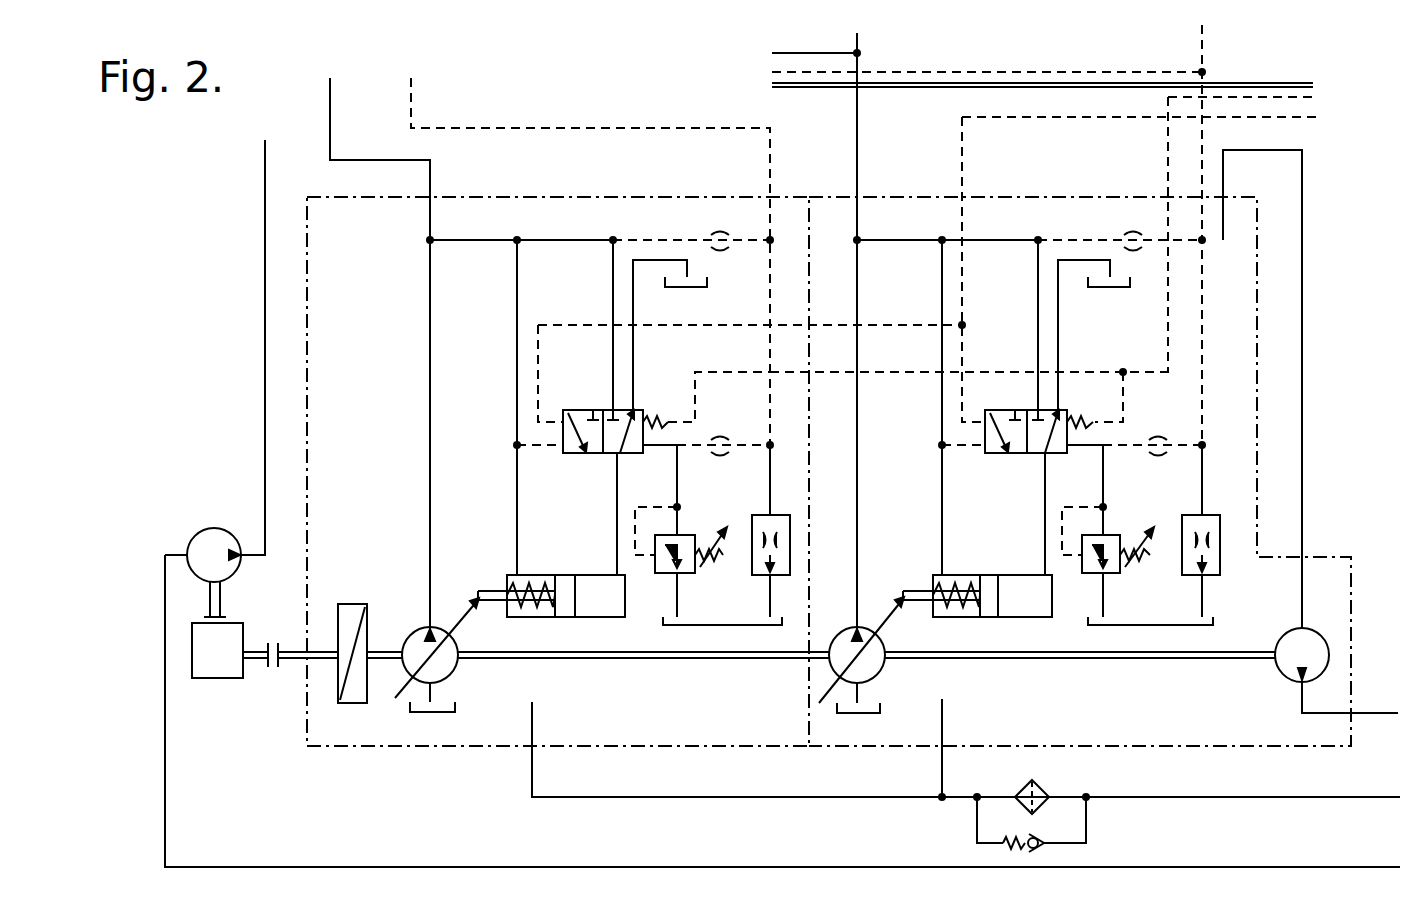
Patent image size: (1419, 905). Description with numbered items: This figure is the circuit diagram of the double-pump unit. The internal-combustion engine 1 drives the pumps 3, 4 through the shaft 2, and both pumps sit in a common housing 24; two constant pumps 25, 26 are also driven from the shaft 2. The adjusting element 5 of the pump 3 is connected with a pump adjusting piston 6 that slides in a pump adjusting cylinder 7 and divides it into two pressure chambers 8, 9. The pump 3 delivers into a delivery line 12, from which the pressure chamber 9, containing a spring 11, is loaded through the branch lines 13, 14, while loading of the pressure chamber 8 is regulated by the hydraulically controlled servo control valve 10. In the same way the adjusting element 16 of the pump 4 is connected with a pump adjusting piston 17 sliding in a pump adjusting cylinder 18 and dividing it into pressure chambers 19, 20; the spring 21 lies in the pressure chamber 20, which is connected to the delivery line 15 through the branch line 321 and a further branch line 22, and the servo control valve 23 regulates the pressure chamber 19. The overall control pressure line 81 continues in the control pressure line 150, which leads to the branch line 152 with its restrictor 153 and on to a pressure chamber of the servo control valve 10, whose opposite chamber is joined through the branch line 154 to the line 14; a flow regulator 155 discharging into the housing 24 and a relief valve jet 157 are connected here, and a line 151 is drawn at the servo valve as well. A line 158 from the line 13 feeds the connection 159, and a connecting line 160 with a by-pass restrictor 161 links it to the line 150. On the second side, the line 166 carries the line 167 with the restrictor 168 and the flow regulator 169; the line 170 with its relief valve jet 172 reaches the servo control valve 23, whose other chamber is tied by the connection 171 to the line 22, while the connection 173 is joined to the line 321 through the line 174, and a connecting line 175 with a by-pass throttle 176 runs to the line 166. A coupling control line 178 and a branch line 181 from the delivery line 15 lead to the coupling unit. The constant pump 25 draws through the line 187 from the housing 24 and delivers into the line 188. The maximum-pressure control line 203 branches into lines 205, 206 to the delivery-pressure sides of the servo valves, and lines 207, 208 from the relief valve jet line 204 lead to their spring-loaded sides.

The internal-combustion engine 1 is at (218, 680).
The shaft 2 is at (670, 660).
The pump 3 is at (458, 668).
The pump 4 is at (885, 668).
The adjusting element 5 is at (470, 598).
The pump adjusting piston 6 is at (566, 578).
The pump adjusting cylinder 7 is at (580, 617).
The pressure chamber 8 is at (612, 613).
The pressure chamber 9 is at (532, 578).
The servo control valve 10 is at (592, 458).
The spring 11 is at (530, 610).
The delivery line 12 is at (428, 324).
The branch line 13 is at (493, 243).
The branch line 14 is at (515, 299).
The delivery line 15 is at (870, 133).
The adjusting element 16 is at (900, 597).
The pump adjusting piston 17 is at (993, 578).
The pump adjusting cylinder 18 is at (1016, 617).
The pressure chamber 19 is at (1042, 612).
The pressure chamber 20 is at (952, 578).
The spring 21 is at (953, 612).
The branch line 22 is at (940, 406).
The servo control valve 23 is at (1036, 458).
The common housing 24 is at (895, 197).
The constant pump 25 is at (1335, 612).
The constant pump 26 is at (200, 540).
The overall control pressure line 81 is at (618, 126).
The control pressure line 150 is at (768, 328).
The line 151 is at (766, 440).
The branch line 152 is at (656, 490).
The restrictor 153 is at (716, 456).
The branch line 154 is at (525, 448).
The flow regulator 155 is at (753, 515).
The relief valve jet 157 is at (695, 575).
The line 158 is at (572, 238).
The connection 159 is at (611, 299).
The connecting line 160 is at (662, 238).
The by-pass restrictor 161 is at (724, 210).
The line 166 is at (1205, 368).
The line 167 is at (1196, 440).
The restrictor 168 is at (1160, 456).
The flow regulator 169 is at (1212, 515).
The line 170 is at (1100, 450).
The connection 171 is at (962, 452).
The relief valve jet 172 is at (1118, 575).
The connection 173 is at (1036, 279).
The line 174 is at (1014, 238).
The connecting line 175 is at (1086, 238).
The by-pass throttle 176 is at (1148, 208).
The coupling control line 178 is at (918, 70).
The branch line 181 is at (796, 50).
The line 187 is at (1305, 416).
The line 188 is at (1372, 713).
The maximum-pressure control line 203 is at (1285, 120).
The relief valve jet line 204 is at (1290, 98).
The line 205 is at (966, 355).
The line 206 is at (540, 358).
The line 207 is at (1125, 400).
The line 208 is at (693, 398).
The branch line 321 is at (868, 243).